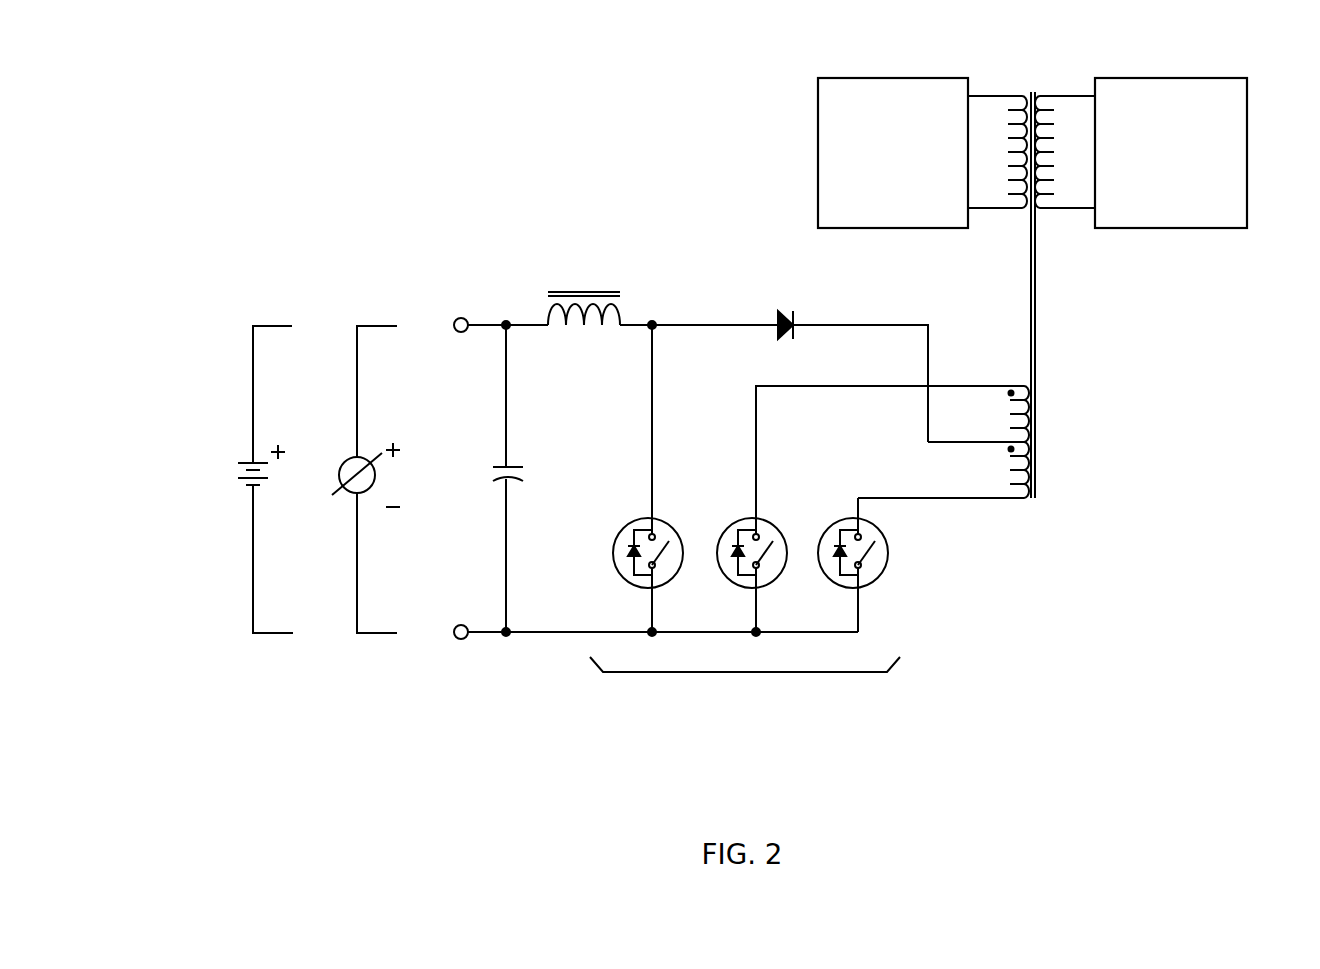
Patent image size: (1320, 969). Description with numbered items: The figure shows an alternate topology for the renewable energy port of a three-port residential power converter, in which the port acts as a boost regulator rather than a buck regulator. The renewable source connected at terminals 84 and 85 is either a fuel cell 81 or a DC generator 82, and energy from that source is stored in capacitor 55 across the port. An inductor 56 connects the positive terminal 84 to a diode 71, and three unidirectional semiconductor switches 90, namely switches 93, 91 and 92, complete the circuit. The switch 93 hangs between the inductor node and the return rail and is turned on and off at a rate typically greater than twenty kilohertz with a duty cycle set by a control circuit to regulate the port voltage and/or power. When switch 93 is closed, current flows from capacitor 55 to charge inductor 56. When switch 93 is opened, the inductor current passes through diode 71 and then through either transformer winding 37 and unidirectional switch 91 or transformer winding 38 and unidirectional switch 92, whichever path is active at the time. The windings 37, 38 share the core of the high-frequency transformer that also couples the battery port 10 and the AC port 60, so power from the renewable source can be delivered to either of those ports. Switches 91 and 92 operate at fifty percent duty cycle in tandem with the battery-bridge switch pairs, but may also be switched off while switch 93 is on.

The battery port 10 is at (898, 131).
The AC port 60 is at (1171, 131).
The transformer winding 37 is at (892, 414).
The transformer winding 38 is at (943, 470).
The terminal 84 is at (498, 307).
The terminal 85 is at (653, 615).
The inductor 56 is at (663, 293).
The diode 71 is at (849, 359).
The capacitor 55 is at (495, 478).
The unidirectional semiconductor switches 90 is at (747, 554).
The unidirectional switch 91 is at (747, 509).
The unidirectional switch 92 is at (848, 562).
The unidirectional switch 93 is at (643, 478).
The fuel cell 81 is at (248, 451).
The DC generator 82 is at (354, 417).